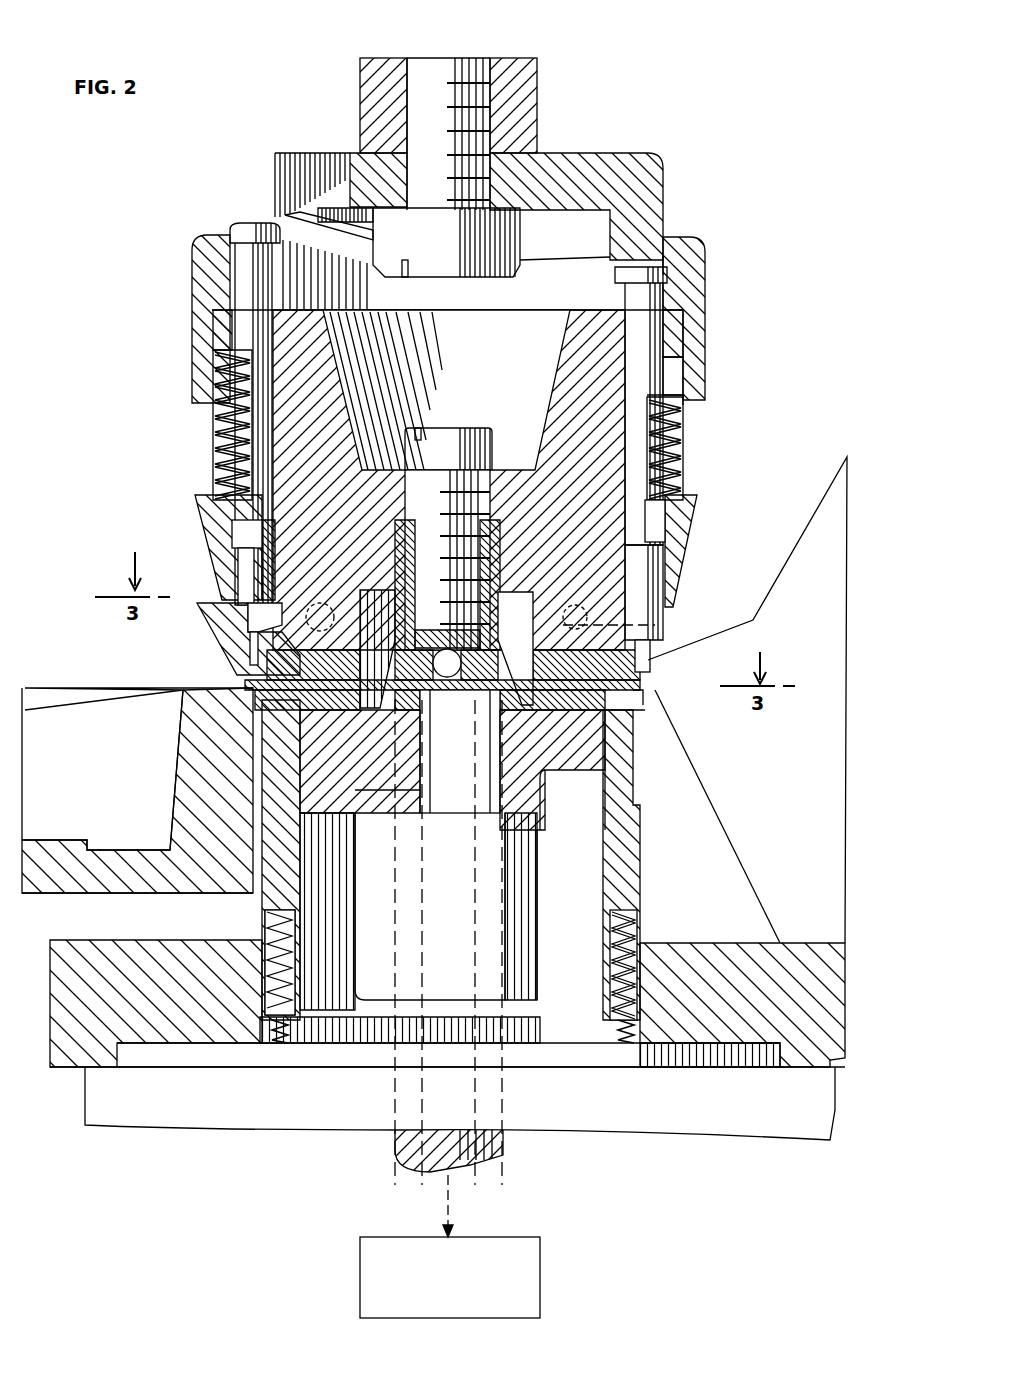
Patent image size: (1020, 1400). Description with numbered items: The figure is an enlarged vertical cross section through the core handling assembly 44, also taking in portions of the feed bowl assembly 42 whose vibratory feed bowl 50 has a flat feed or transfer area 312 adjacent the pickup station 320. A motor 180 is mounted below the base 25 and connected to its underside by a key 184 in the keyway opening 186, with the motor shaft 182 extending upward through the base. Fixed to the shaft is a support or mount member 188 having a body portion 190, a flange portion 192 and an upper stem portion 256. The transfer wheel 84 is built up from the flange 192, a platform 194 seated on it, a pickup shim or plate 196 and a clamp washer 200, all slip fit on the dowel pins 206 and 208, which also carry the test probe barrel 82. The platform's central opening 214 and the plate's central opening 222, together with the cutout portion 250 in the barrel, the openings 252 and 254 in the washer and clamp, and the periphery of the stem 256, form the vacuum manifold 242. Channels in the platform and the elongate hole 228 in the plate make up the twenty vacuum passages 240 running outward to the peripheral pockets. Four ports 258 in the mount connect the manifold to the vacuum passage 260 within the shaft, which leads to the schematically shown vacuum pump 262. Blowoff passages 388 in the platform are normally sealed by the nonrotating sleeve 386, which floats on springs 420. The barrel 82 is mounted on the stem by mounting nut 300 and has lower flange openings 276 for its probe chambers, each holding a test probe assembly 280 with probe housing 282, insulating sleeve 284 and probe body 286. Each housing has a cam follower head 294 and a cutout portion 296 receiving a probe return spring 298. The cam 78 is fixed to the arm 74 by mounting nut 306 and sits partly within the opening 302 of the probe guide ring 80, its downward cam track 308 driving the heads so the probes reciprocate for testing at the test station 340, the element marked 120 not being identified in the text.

The base 25 is at (62, 992).
The feed bowl assembly 42 is at (79, 670).
The core handling assembly 44 is at (165, 475).
The vibratory feed bowl 50 is at (115, 888).
The arm 74 is at (372, 101).
The cam 78 is at (292, 165).
The probe guide ring 80 is at (706, 298).
The test probe barrel 82 is at (205, 330).
The transfer wheel 84 is at (255, 712).
The shield 120 is at (730, 846).
The motor 180 is at (188, 1128).
The motor shaft 182 is at (400, 1138).
The key 184 is at (640, 928).
The opening 186 is at (125, 1052).
The support or mount member 188 is at (552, 932).
The body portion 190 is at (528, 870).
The flange portion 192 is at (555, 770).
The platform 194 is at (612, 720).
The pickup shim or plate 196 is at (640, 700).
The clamp washer 200 is at (645, 690).
The dowel pin 206 is at (663, 628).
The dowel pin 208 is at (318, 602).
The central opening 214 is at (515, 705).
The central opening 222 is at (505, 708).
The elongate hole 228 is at (258, 665).
The vacuum passage 240 is at (620, 745).
The vacuum manifold 242 is at (532, 632).
The cutout portion 250 is at (520, 610).
The opening 252 is at (470, 680).
The opening 254 is at (548, 625).
The upper stem portion 256 is at (505, 590).
The passage or port 258 is at (370, 712).
The vacuum passage 260 is at (455, 750).
The vacuum pump 262 is at (540, 1262).
The lower flange opening 276 is at (662, 522).
The test probe assembly 280 is at (680, 377).
The probe housing 282 is at (672, 332).
The insulating sleeve 284 is at (232, 535).
The probe body 286 is at (240, 580).
The cam follower head 294 is at (240, 232).
The cutout portion 296 is at (683, 405).
The probe return spring 298 is at (215, 423).
The mounting nut 300 is at (470, 425).
The opening 302 is at (666, 240).
The mounting nut 306 is at (505, 279).
The cam track or surface 308 is at (290, 220).
The flat feed or transfer area 312 is at (245, 682).
The pickup station 320 is at (240, 648).
The test station 340 is at (655, 715).
The nonrotating sleeve 386 is at (262, 905).
The blowoff passage 388 is at (248, 712).
The spring 420 is at (268, 925).